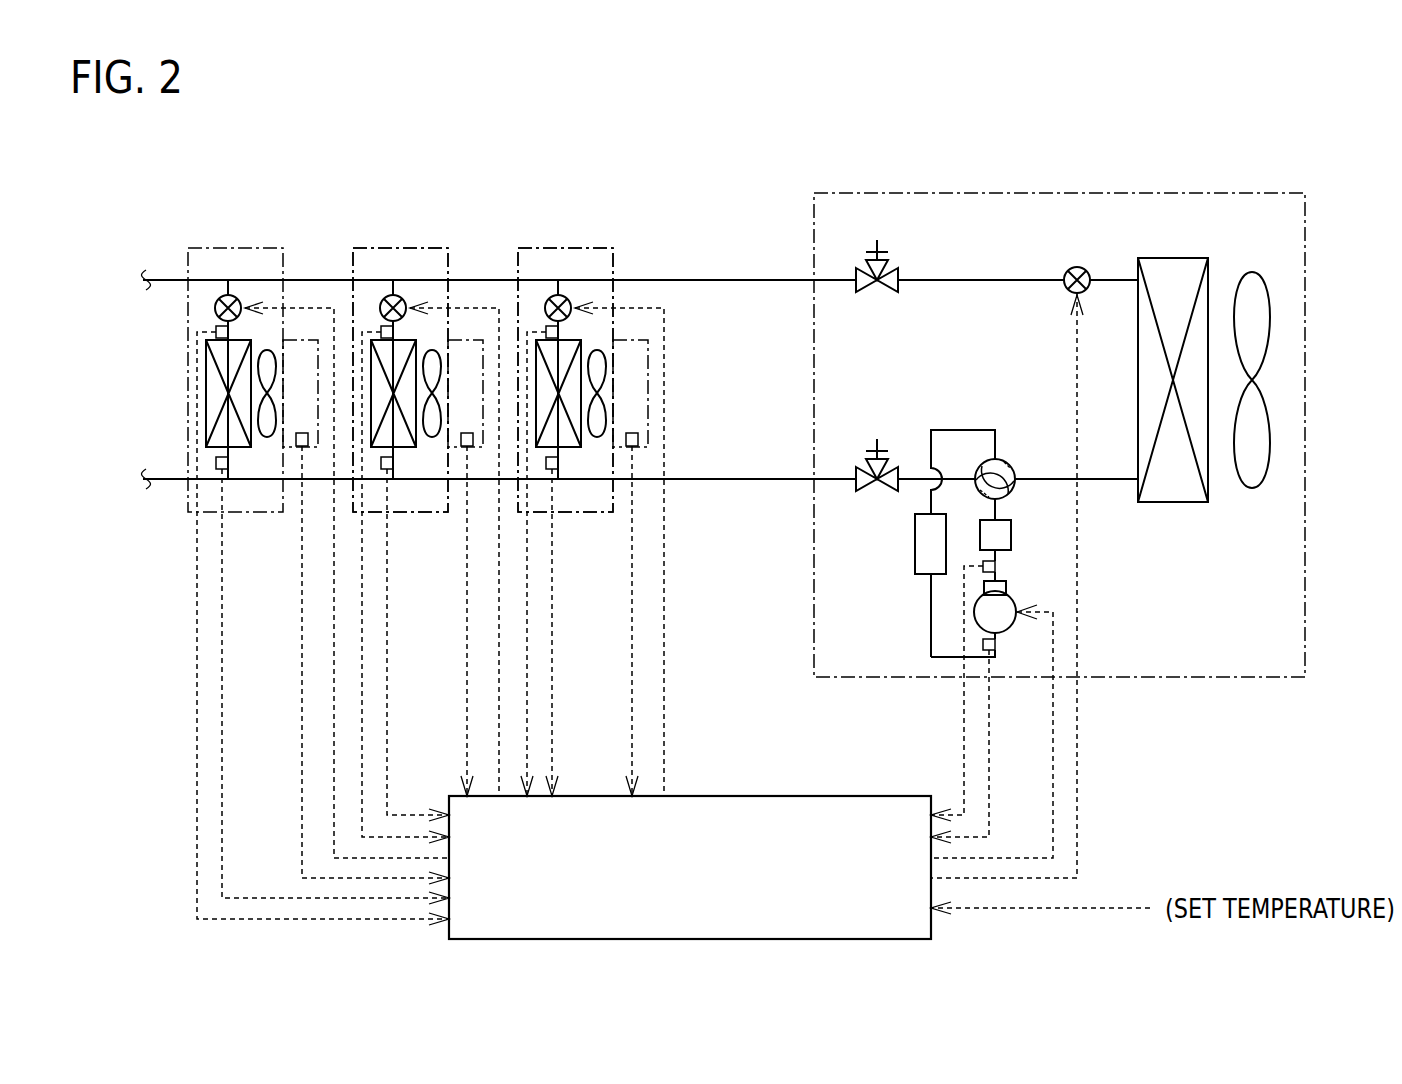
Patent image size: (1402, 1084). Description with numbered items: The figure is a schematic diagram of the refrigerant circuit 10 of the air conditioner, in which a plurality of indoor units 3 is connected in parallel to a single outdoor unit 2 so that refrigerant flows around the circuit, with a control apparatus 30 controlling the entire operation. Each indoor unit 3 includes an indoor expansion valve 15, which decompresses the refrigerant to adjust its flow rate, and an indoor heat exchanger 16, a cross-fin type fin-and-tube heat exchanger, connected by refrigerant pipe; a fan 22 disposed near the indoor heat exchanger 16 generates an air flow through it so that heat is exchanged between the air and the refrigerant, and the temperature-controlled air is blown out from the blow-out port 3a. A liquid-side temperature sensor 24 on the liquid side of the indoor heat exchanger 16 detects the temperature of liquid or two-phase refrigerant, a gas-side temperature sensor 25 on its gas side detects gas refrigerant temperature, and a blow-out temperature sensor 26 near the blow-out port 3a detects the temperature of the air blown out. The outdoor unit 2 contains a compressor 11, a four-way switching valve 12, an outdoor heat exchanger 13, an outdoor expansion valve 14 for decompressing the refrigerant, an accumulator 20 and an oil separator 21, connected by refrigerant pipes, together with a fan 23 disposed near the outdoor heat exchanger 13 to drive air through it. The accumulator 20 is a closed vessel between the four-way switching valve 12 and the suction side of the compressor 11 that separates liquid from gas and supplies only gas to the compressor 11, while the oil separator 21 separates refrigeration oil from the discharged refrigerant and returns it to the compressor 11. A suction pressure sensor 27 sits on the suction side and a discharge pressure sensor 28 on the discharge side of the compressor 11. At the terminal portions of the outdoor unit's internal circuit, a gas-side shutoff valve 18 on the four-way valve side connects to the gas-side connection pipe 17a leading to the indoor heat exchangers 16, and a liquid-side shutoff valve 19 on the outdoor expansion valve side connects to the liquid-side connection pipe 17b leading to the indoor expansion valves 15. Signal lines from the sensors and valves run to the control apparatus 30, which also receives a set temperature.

The outdoor unit 2 is at (1165, 193).
The indoor unit 3 is at (236, 248).
The blow-out port 3a is at (300, 340).
The refrigerant circuit 10 is at (640, 362).
The compressor 11 is at (1000, 607).
The four-way switching valve 12 is at (1010, 462).
The outdoor heat exchanger 13 is at (1173, 493).
The outdoor expansion valve 14 is at (1077, 267).
The indoor expansion valve 15 is at (215, 306).
The indoor heat exchanger 16 is at (206, 392).
The gas-side connection pipe 17a is at (757, 482).
The liquid-side connection pipe 17b is at (688, 280).
The gas-side shutoff valve 18 is at (866, 512).
The liquid-side shutoff valve 19 is at (873, 224).
The accumulator 20 is at (915, 545).
The oil separator 21 is at (1011, 535).
The fan 22 is at (268, 350).
The fan 23 is at (1268, 292).
The liquid-side temperature sensor 24 is at (216, 331).
The gas-side temperature sensor 25 is at (216, 463).
The blow-out temperature sensor 26 is at (296, 440).
The suction pressure sensor 27 is at (983, 645).
The discharge pressure sensor 28 is at (995, 566).
The control apparatus 30 is at (763, 796).